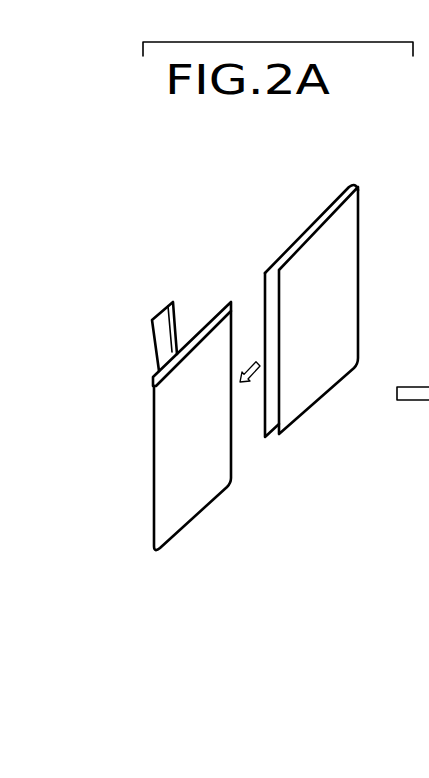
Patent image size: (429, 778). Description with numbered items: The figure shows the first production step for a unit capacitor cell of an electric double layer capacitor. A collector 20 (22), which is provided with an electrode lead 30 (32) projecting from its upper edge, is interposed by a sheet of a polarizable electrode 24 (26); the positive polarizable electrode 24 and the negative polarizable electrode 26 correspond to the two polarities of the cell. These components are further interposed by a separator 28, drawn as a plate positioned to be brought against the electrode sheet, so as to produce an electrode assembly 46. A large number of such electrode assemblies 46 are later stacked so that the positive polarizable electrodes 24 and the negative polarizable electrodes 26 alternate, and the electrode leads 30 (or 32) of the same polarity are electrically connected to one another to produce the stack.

The collector 20 is at (236, 280).
The collector 22 is at (206, 318).
The positive polarizable electrode 24 is at (236, 430).
The negative polarizable electrode 26 is at (195, 493).
The separator 28 is at (345, 249).
The electrode lead 30 is at (197, 293).
The electrode lead 32 is at (172, 305).
The electrode assembly 46 is at (330, 166).